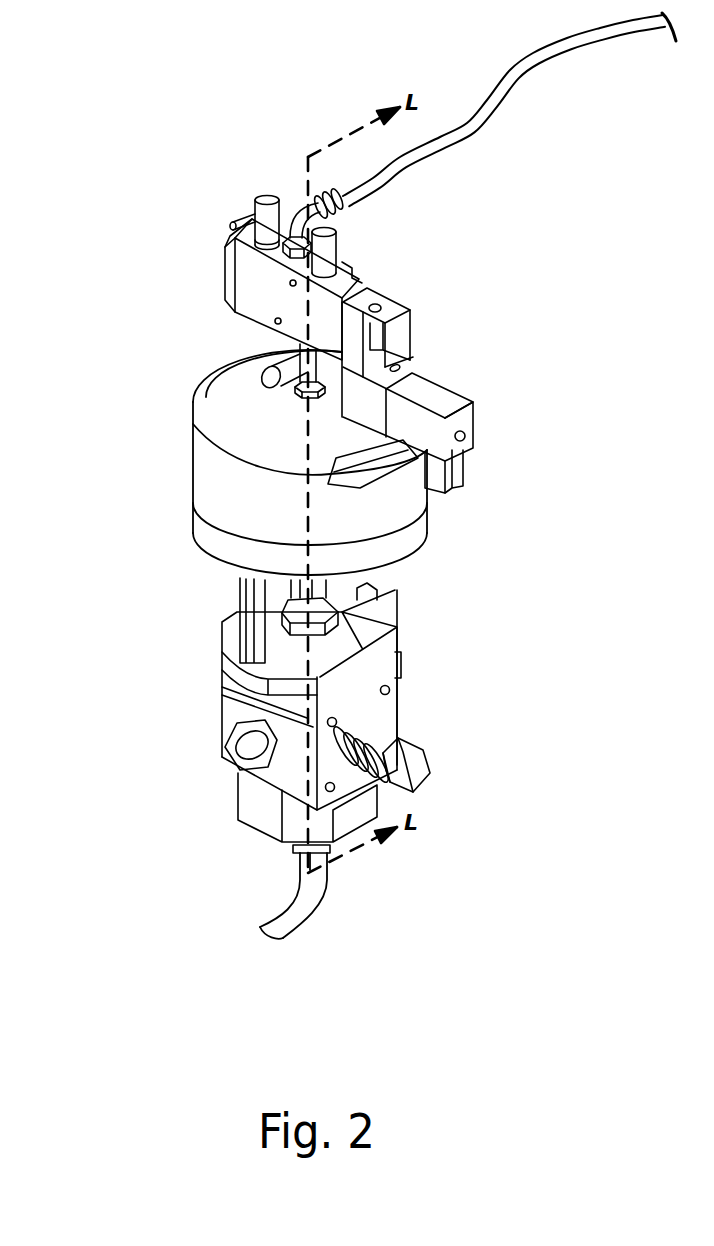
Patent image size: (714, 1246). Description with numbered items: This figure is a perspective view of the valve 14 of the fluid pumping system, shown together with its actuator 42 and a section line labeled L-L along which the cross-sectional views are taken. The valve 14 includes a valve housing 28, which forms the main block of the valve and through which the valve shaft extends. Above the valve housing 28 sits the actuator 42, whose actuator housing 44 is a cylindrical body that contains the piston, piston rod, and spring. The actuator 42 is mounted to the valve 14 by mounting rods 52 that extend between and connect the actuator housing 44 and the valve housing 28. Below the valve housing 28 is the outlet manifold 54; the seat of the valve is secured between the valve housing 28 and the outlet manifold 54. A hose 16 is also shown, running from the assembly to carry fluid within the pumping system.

The valve 14 is at (291, 695).
The hose 16 is at (316, 890).
The valve housing 28 is at (385, 664).
The actuator 42 is at (244, 448).
The actuator housing 44 is at (235, 359).
The mounting rods 52 is at (238, 597).
The outlet manifold 54 is at (262, 803).